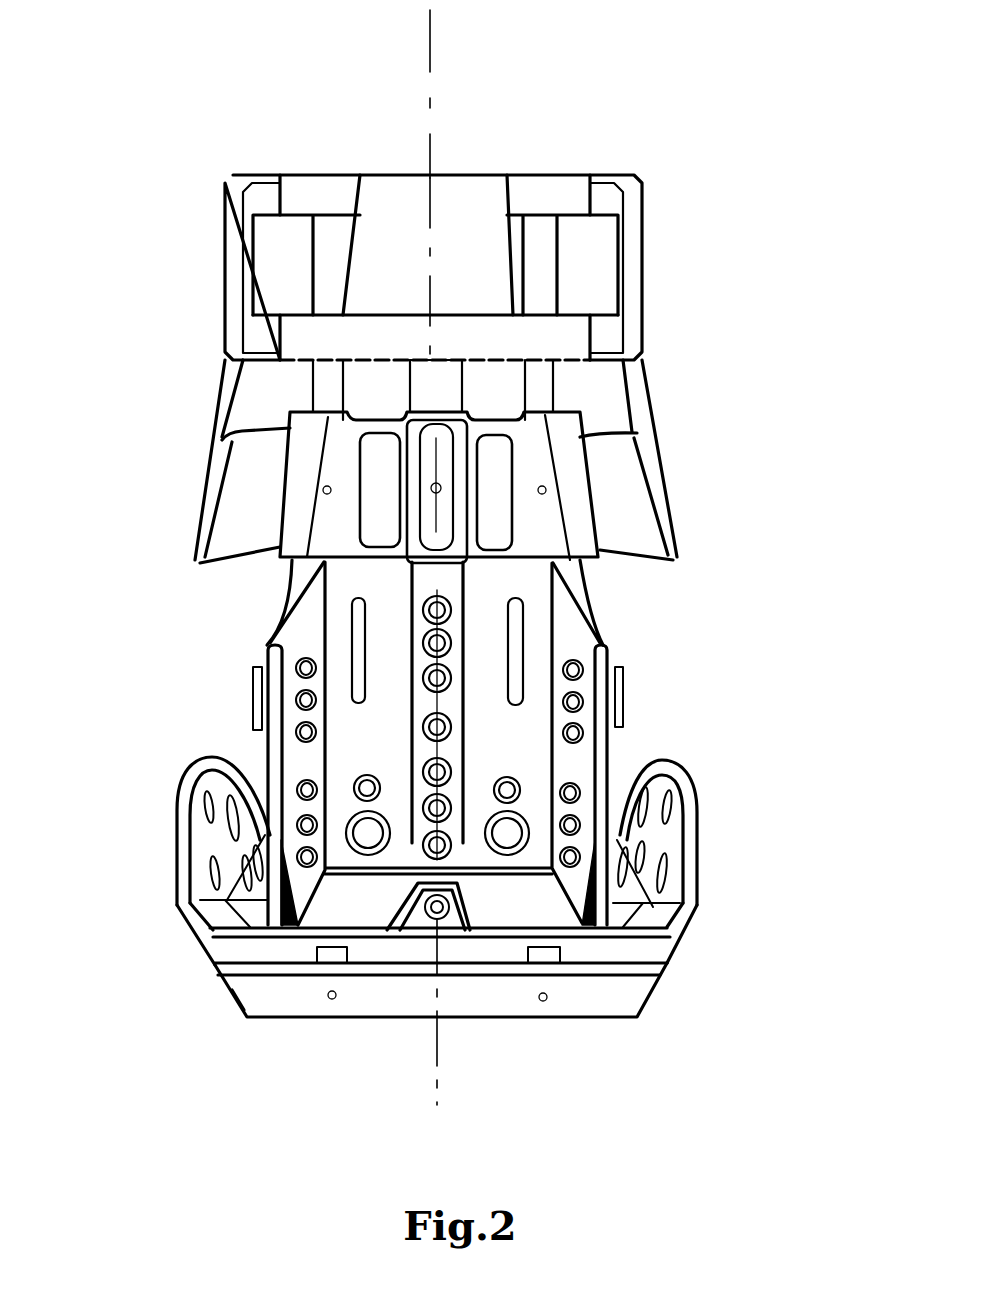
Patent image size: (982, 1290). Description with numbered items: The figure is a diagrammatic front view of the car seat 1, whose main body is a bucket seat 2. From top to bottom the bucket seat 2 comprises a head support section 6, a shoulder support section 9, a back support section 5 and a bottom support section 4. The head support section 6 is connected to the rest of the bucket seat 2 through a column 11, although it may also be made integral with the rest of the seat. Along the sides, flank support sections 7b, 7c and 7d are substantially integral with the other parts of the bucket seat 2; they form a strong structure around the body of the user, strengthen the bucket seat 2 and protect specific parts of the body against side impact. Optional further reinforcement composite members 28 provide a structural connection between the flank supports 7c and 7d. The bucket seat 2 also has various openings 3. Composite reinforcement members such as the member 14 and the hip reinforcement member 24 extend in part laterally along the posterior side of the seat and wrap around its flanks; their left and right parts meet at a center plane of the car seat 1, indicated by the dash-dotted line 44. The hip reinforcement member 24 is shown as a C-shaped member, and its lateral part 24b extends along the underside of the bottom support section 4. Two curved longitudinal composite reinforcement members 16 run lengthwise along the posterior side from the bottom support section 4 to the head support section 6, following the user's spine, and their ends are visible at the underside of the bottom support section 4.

The car seat 1 is at (185, 155).
The bucket seat 2 is at (352, 902).
The openings 3 is at (573, 670).
The bottom support section 4 is at (527, 917).
The back support section 5 is at (400, 742).
The head support section 6 is at (375, 258).
The flank support section 7b is at (267, 642).
The flank support section 7c is at (243, 500).
The flank support section 7d is at (282, 272).
The shoulder support section 9 is at (350, 475).
The column 11 is at (437, 382).
The composite reinforcement member 14 is at (253, 690).
The longitudinal composite reinforcement members 16 is at (330, 392).
The hip reinforcement member 24 is at (613, 995).
The lateral part of the hip reinforcement member 24b is at (270, 992).
The reinforcement composite members 28 is at (233, 368).
The center plane 44 is at (430, 33).